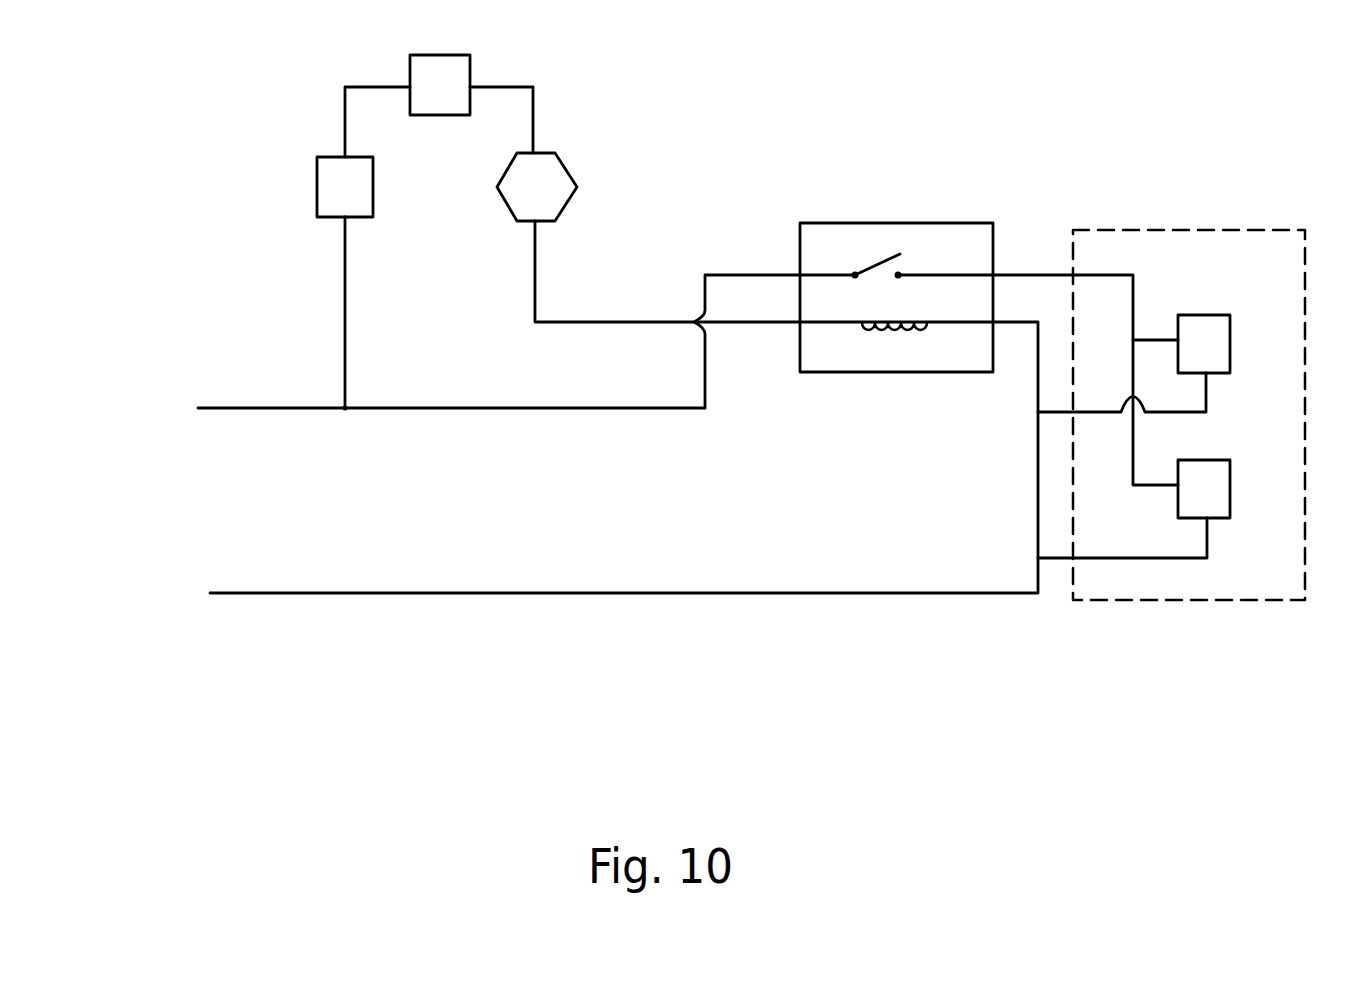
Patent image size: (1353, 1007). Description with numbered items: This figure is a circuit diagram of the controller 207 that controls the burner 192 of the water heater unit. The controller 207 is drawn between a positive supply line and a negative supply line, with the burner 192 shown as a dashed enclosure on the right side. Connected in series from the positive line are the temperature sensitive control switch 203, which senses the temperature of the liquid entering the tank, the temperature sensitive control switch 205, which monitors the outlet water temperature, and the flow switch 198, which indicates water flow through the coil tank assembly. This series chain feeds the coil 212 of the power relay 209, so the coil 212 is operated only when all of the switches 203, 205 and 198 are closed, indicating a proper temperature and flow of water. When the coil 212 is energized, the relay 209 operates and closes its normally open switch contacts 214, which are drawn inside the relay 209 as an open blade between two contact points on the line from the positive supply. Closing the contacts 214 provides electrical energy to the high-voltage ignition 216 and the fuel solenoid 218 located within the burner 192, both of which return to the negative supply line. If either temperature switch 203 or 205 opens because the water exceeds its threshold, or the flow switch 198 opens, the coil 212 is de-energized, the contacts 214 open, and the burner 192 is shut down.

The burner 192 is at (1140, 600).
The flow switch 198 is at (547, 172).
The temperature sensitive control switch 203 is at (317, 200).
The temperature sensitive control switch 205 is at (457, 52).
The controller 207 is at (420, 630).
The power relay 209 is at (962, 223).
The coil 212 is at (895, 338).
The normally open switch contacts 214 is at (870, 262).
The high-voltage ignition 216 is at (1200, 315).
The fuel solenoid 218 is at (1200, 460).